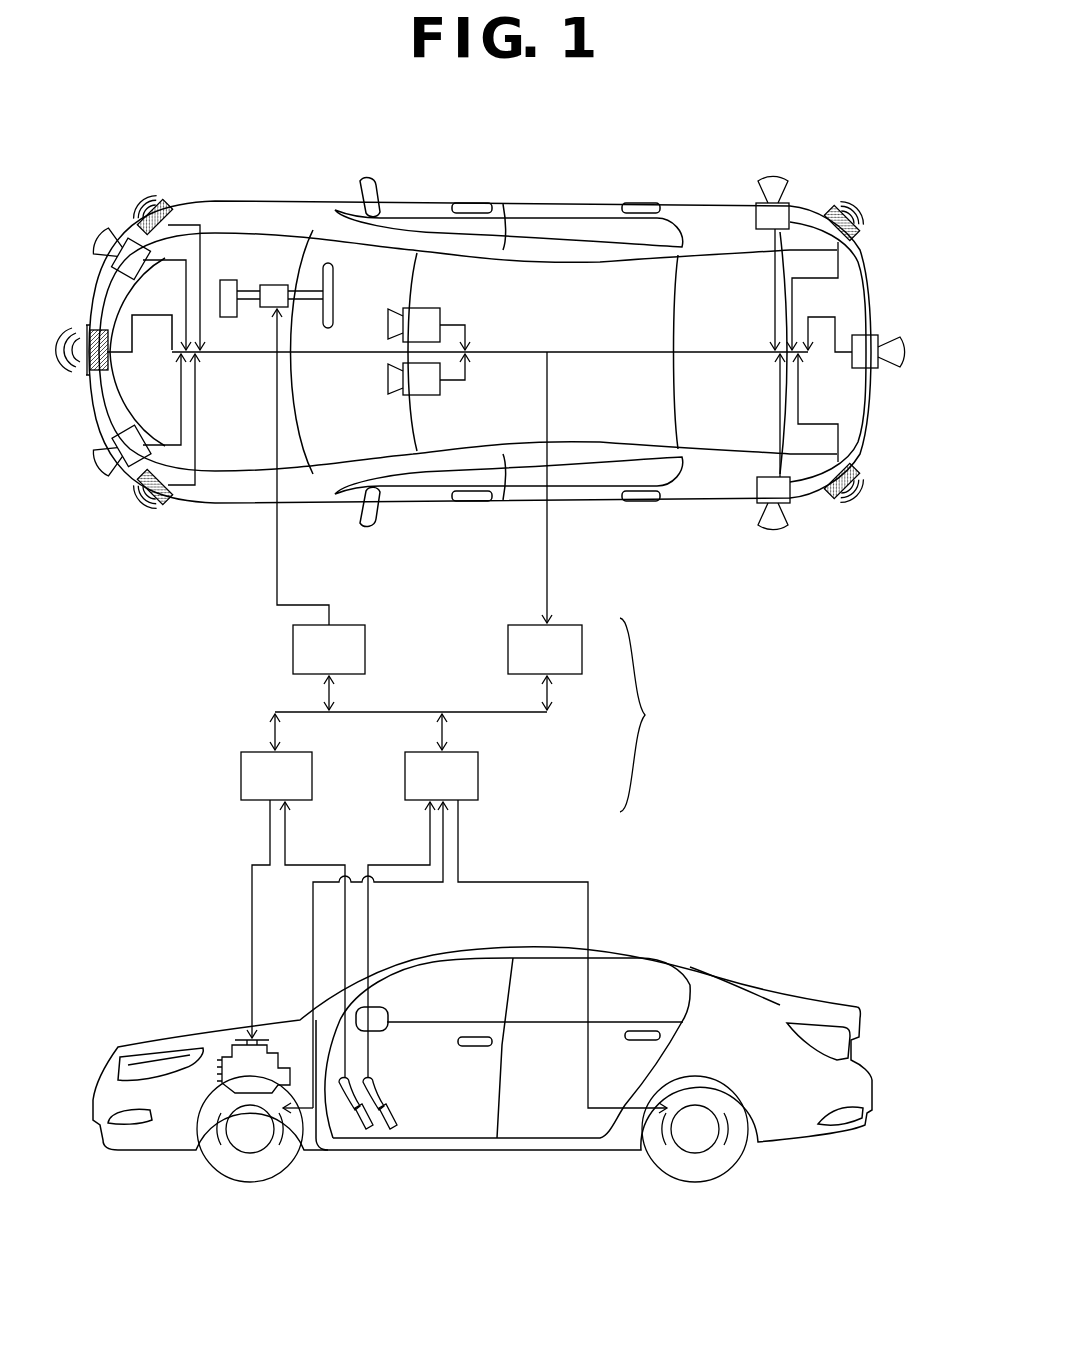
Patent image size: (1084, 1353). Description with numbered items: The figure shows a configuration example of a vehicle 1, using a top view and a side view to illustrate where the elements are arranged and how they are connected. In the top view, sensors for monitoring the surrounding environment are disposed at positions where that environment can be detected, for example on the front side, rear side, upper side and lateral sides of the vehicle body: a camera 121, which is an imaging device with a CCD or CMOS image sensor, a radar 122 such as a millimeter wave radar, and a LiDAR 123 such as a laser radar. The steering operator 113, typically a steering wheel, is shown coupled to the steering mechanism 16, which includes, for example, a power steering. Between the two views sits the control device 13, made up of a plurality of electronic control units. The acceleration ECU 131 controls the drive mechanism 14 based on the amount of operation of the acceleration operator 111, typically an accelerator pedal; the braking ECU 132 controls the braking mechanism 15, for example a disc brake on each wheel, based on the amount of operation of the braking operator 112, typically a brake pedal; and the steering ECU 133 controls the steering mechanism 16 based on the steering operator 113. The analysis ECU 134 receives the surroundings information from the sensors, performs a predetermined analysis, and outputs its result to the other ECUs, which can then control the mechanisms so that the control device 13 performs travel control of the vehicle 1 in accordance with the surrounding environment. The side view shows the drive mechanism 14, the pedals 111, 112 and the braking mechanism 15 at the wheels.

The vehicle 1 is at (693, 155).
The control device 13 is at (651, 715).
The drive mechanism 14 is at (230, 1052).
The braking mechanism 15 is at (253, 1152).
The steering mechanism 16 is at (281, 283).
The acceleration operator 111 is at (368, 1130).
The braking operator 112 is at (394, 1130).
The steering operator 113 is at (334, 272).
The camera 121 is at (440, 308).
The radar 122 is at (165, 196).
The LiDAR 123 is at (124, 233).
The acceleration ECU 131 is at (299, 789).
The braking ECU 132 is at (464, 789).
The steering ECU 133 is at (351, 662).
The analysis ECU 134 is at (567, 662).